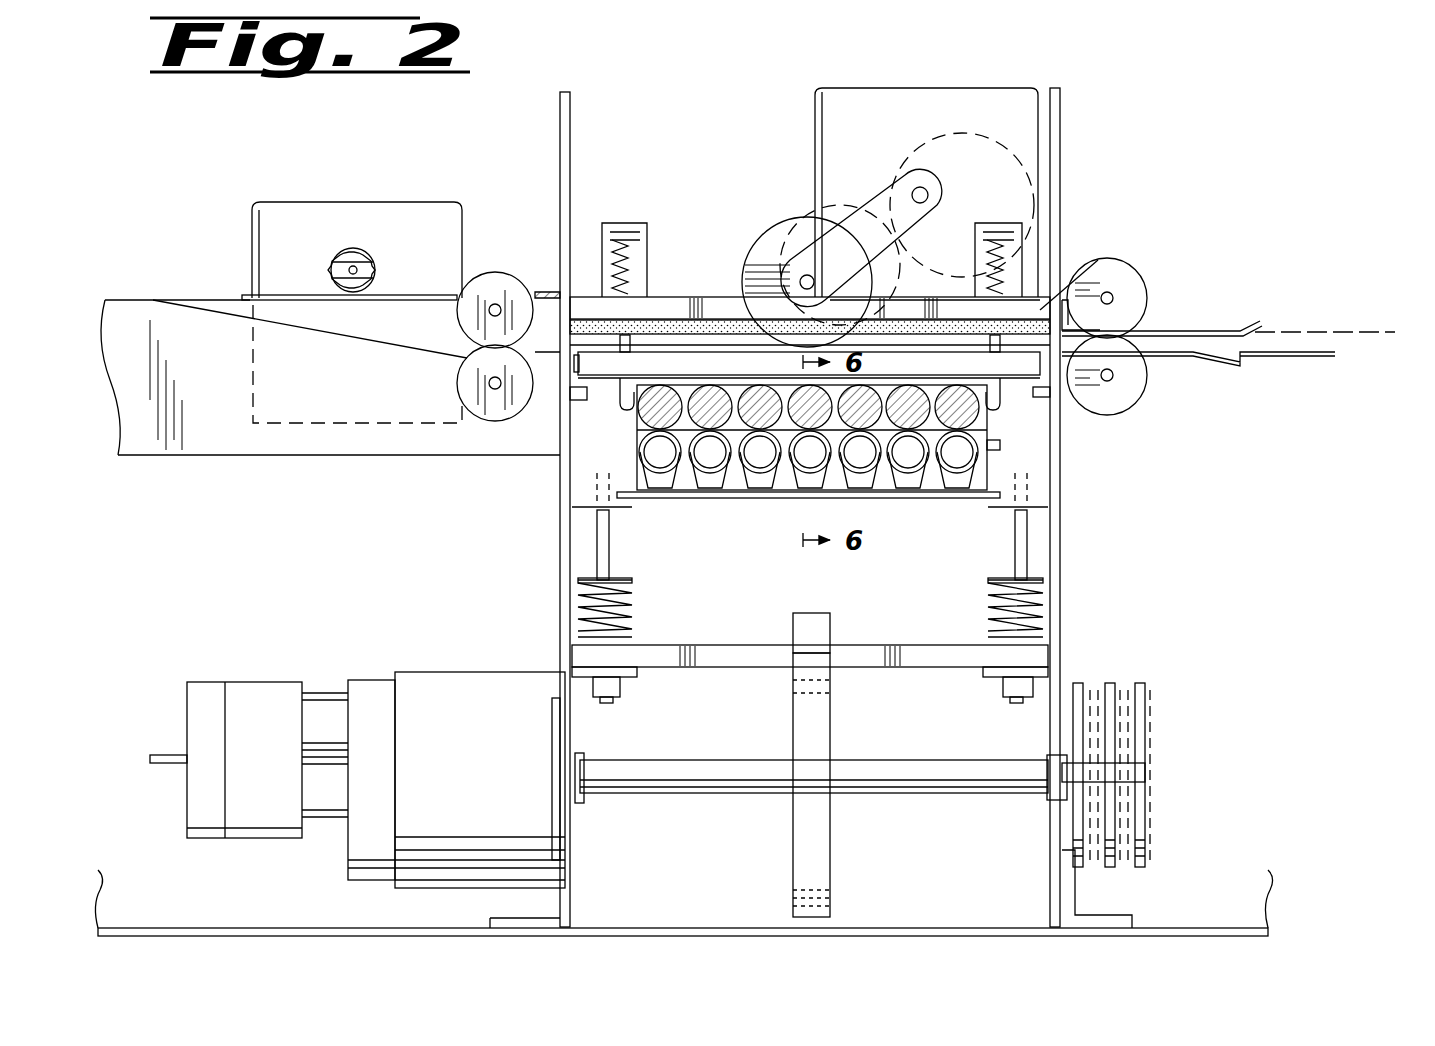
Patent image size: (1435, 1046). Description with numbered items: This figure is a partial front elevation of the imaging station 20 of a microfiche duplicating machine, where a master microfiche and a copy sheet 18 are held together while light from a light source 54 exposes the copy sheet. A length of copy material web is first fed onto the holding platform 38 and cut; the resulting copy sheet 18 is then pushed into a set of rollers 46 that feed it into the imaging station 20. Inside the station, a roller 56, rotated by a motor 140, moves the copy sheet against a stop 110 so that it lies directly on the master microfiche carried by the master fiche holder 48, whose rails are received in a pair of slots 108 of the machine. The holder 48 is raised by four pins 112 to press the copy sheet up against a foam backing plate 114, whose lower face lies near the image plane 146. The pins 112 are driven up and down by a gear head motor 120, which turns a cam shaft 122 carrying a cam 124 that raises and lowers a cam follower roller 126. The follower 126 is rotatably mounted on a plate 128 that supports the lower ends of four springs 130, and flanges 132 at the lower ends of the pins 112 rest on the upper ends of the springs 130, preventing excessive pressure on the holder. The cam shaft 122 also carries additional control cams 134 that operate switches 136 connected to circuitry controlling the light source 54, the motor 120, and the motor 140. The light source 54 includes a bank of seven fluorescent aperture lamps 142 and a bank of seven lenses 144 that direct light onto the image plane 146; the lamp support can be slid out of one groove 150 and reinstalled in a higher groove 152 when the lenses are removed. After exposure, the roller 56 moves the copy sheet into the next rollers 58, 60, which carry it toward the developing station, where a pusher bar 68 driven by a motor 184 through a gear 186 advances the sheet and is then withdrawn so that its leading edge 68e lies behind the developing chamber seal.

The imaging station 20 is at (722, 118).
The motor 140 is at (914, 100).
The gear 186 is at (355, 252).
The motor 184 is at (435, 225).
The roller 58 is at (497, 282).
The leading edge of pusher bar 68e is at (262, 297).
The pusher bar 68 is at (282, 297).
The stop 110 is at (623, 337).
The roller 56 is at (770, 240).
The master fiche holder 48 is at (702, 350).
The foam backing plate 114 is at (913, 330).
The image plane 146 is at (1040, 280).
The rollers 46 is at (1137, 297).
The copy sheet 18 is at (1298, 326).
The holding platform 38 is at (1303, 356).
The slots 108 is at (621, 405).
The light source 54 is at (1003, 425).
The higher groove 152 is at (1000, 447).
The fluorescent aperture lamps 142 is at (663, 463).
The lenses 144 is at (908, 413).
The groove 150 is at (990, 497).
The pins 112 is at (596, 558).
The flanges 132 is at (580, 592).
The springs 130 is at (580, 628).
The cam follower roller 126 is at (818, 623).
The plate 128 is at (940, 657).
The switches 136 is at (1148, 705).
The control cams 134 is at (1110, 683).
The gear head motor 120 is at (452, 786).
The cam shaft 122 is at (638, 793).
The cam 124 is at (820, 820).
The roller 60 is at (497, 421).